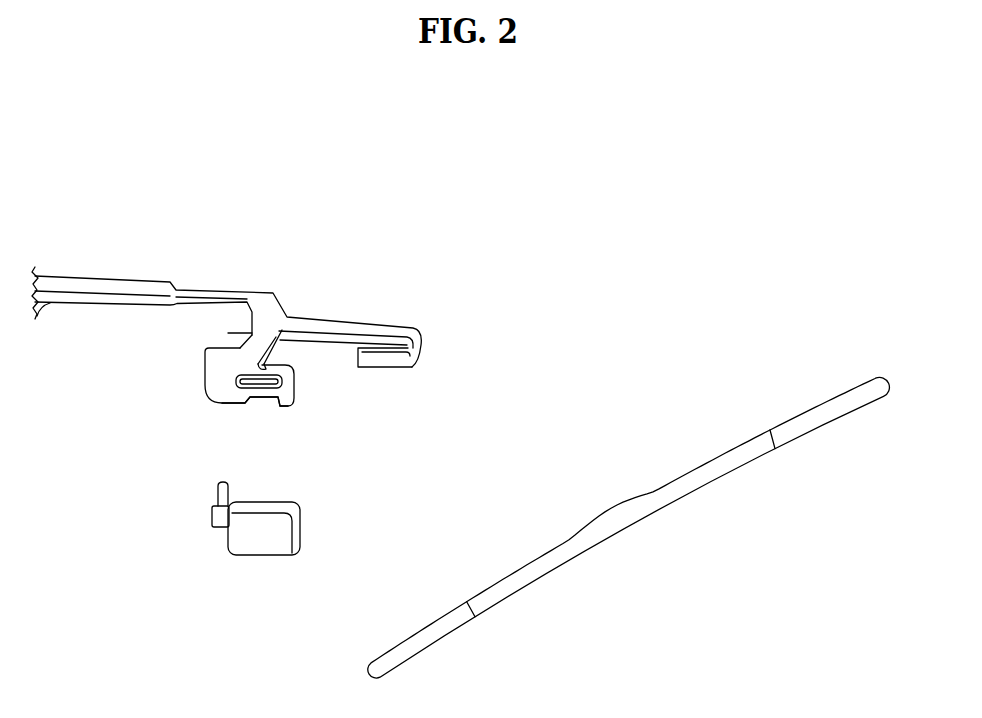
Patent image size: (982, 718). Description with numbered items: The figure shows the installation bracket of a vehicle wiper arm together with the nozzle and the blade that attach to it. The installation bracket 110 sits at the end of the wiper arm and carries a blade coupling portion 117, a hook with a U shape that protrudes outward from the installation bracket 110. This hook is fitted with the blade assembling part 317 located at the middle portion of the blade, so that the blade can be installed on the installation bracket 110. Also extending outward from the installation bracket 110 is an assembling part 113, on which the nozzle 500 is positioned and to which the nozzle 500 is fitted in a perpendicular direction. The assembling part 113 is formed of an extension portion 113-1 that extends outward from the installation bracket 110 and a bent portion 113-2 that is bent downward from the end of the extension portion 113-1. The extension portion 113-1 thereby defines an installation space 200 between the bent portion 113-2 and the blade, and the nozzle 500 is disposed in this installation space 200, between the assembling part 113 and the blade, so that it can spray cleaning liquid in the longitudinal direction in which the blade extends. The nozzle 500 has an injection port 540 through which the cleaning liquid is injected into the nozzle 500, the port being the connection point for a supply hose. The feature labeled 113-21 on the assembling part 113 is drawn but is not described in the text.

The installation bracket 110 is at (313, 285).
The assembling part 113 is at (198, 395).
The extension portion 113-1 is at (230, 332).
The bent portion 113-2 is at (243, 405).
The insertion protrusion 113-21 is at (273, 378).
The blade coupling portion 117 is at (407, 367).
The installation space 200 is at (285, 357).
The blade assembling part 317 is at (610, 513).
The nozzle 500 is at (255, 543).
The injection port 540 is at (213, 495).